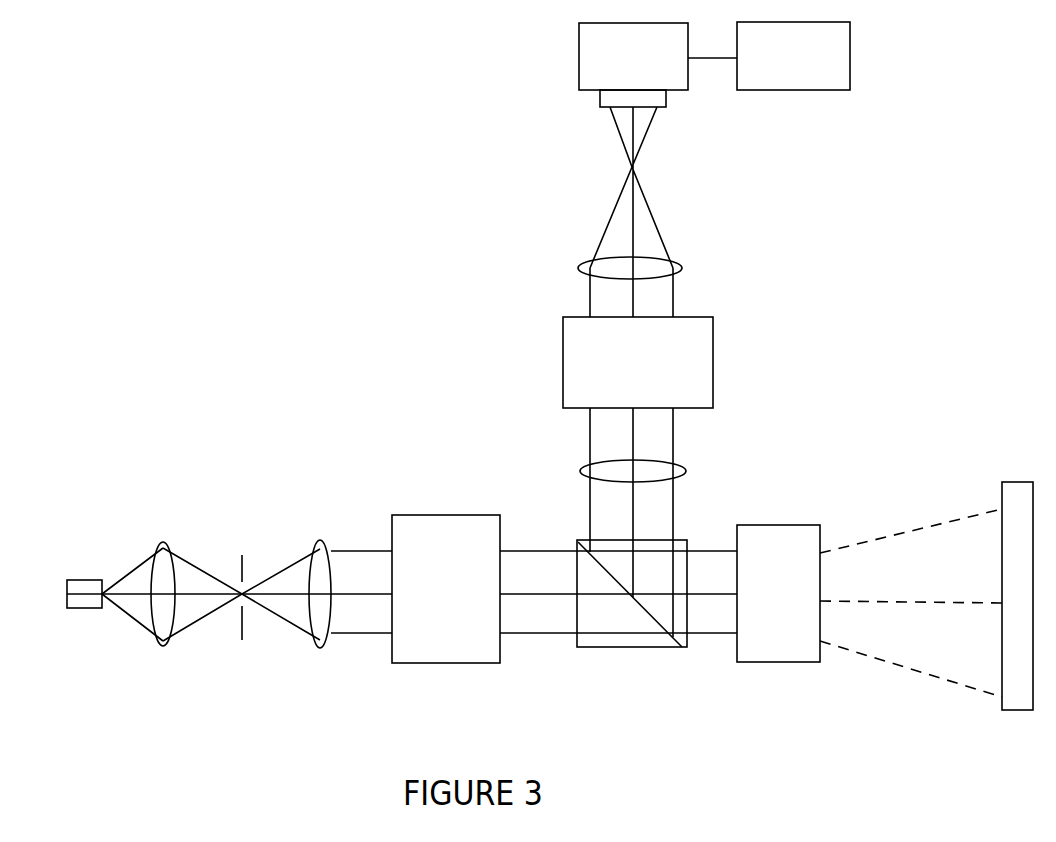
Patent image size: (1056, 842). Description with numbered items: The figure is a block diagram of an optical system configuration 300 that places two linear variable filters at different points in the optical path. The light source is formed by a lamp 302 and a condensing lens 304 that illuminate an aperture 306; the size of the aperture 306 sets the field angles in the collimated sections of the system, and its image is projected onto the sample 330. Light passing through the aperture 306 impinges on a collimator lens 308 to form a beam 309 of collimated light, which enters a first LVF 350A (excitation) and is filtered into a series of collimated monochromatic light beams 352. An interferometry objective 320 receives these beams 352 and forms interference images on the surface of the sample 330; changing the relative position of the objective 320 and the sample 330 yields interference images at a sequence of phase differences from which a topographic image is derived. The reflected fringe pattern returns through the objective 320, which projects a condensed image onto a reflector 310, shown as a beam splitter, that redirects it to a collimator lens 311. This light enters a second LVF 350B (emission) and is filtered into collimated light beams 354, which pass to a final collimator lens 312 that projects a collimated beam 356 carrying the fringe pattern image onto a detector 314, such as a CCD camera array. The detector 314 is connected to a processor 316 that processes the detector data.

The optical system configuration 300 is at (257, 257).
The lamp 302 is at (72, 575).
The condensing lens 304 is at (173, 538).
The aperture 306 is at (253, 540).
The collimator lens 308 is at (330, 540).
The beam of collimated light 309 is at (353, 636).
The first LVF (excitation) 350A is at (455, 503).
The collimated monochromatic light beams 352 is at (538, 643).
The reflector 310 is at (660, 655).
The interferometry objective 320 is at (793, 523).
The sample 330 is at (1023, 473).
The collimator lens 311 is at (692, 472).
The second LVF (emission) 350B is at (717, 370).
The collimated light beams 354 is at (682, 293).
The final collimator lens 312 is at (692, 261).
The collimated beam 356 is at (650, 143).
The detector 314 is at (578, 61).
The processor 316 is at (822, 100).